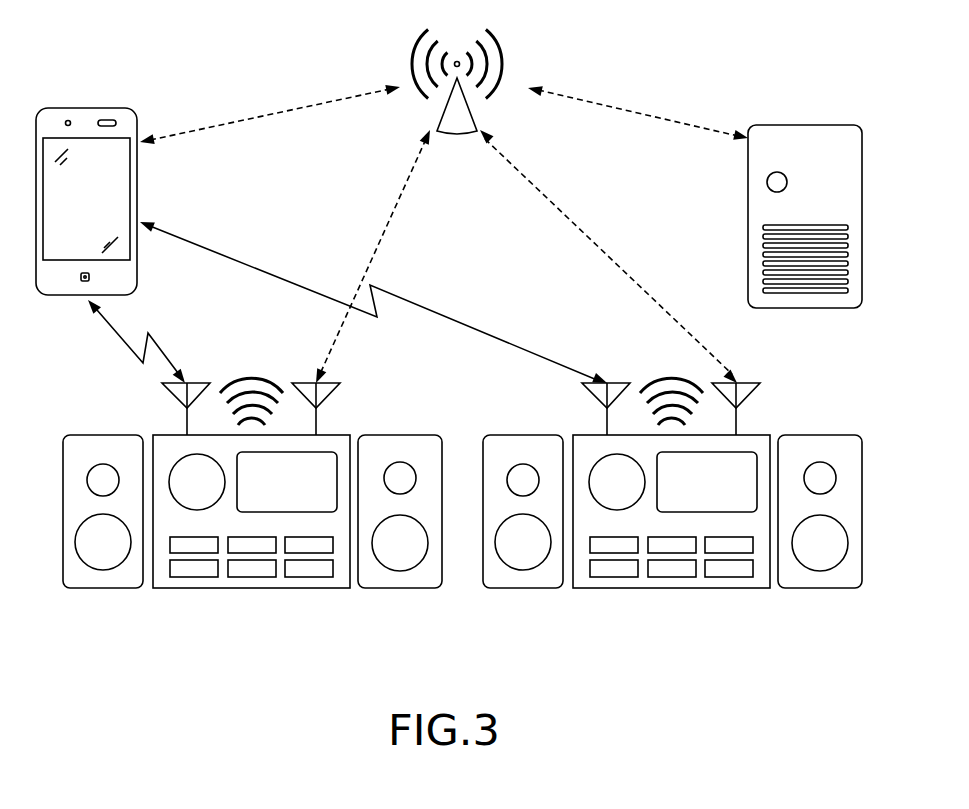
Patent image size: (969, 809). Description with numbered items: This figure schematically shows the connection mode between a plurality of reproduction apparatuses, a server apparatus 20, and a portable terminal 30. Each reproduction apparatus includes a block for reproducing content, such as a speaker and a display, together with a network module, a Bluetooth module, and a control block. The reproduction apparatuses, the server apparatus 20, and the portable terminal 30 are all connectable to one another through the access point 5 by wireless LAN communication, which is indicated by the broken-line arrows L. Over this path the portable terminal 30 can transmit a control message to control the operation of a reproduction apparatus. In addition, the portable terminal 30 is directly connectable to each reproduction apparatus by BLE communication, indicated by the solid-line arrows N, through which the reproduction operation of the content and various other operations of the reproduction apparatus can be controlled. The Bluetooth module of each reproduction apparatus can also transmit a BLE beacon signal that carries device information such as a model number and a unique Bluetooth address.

The access point 5 is at (457, 136).
The server apparatus 20 is at (805, 125).
The portable terminal 30 is at (87, 108).
The arrows of broken lines L is at (275, 112).
The arrows of solid lines N is at (282, 278).